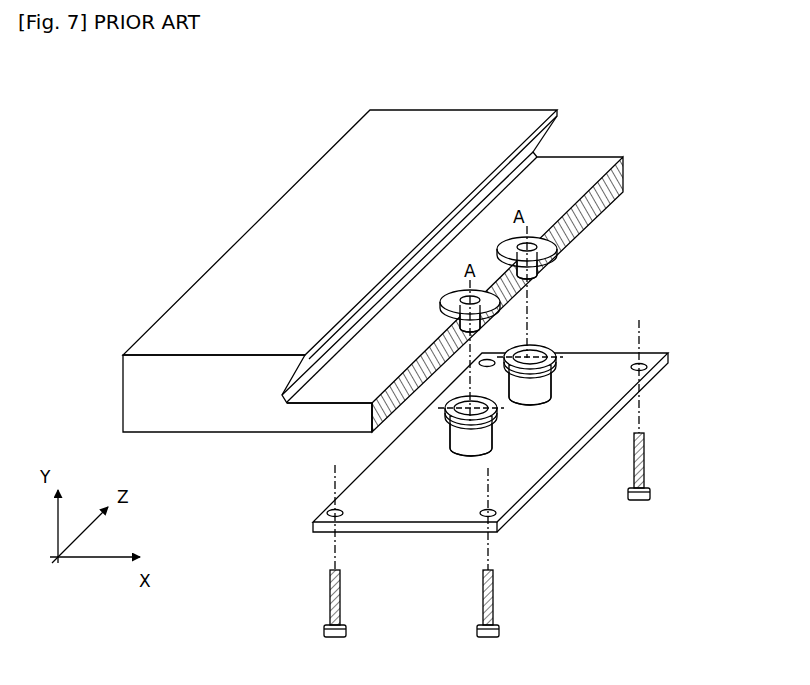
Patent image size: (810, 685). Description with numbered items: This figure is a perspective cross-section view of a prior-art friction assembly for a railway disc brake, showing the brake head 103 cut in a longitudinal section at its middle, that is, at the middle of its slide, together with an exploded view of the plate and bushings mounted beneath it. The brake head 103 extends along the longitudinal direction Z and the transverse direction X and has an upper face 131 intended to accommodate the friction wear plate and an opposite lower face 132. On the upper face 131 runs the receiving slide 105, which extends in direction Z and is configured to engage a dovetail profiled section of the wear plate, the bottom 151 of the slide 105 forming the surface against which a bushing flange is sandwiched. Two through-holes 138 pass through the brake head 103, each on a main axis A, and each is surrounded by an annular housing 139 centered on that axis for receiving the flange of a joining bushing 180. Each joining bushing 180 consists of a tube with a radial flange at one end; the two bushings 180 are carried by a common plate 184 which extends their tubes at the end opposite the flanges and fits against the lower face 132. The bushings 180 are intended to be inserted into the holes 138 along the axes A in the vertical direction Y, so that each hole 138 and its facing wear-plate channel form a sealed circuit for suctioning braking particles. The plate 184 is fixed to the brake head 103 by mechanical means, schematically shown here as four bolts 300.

The brake head 103 is at (398, 310).
The upper face 131 is at (418, 132).
The receiving slide 105 is at (322, 379).
The bottom of the slide 151 is at (543, 174).
The lower face 132 is at (300, 433).
The annular housing 139 is at (537, 234).
The through-hole 138 is at (458, 300).
The plate 184 is at (598, 400).
The joining bushing 180 is at (457, 453).
The bolt 300 is at (330, 600).